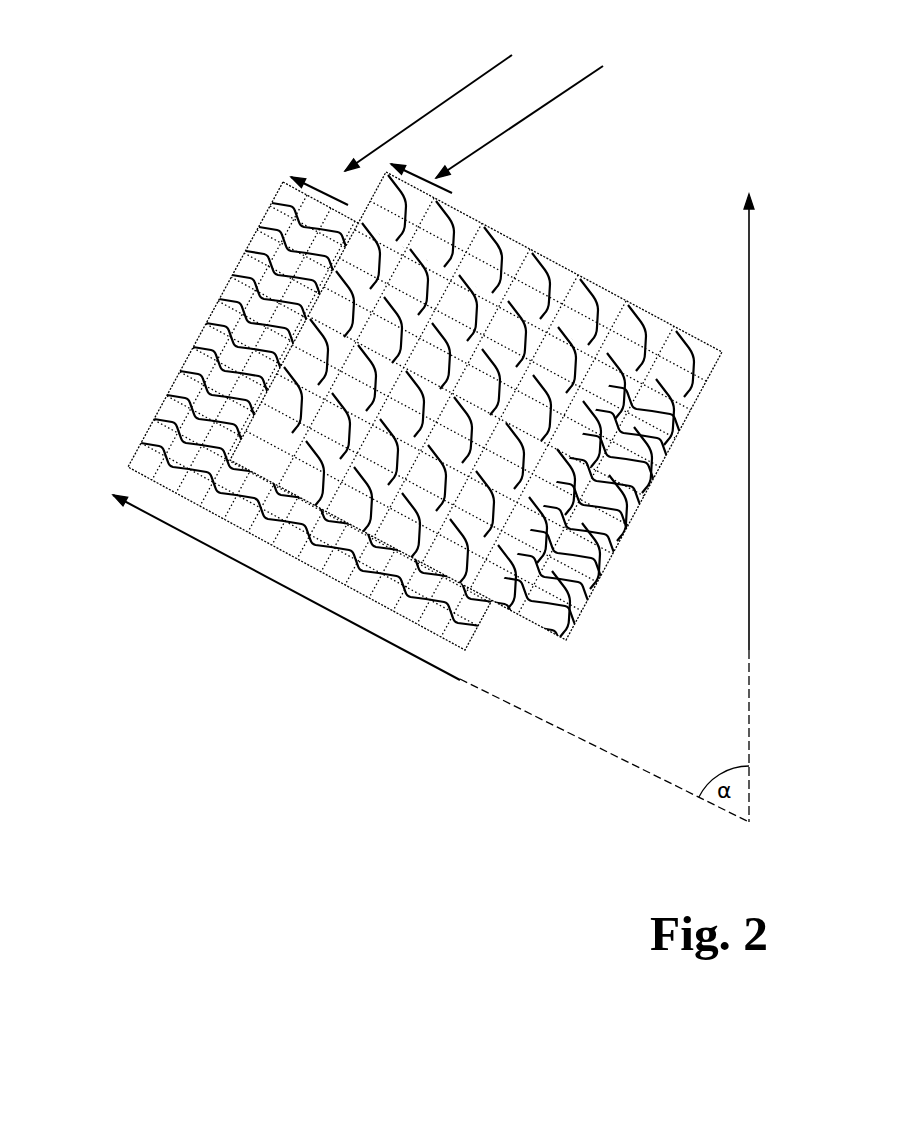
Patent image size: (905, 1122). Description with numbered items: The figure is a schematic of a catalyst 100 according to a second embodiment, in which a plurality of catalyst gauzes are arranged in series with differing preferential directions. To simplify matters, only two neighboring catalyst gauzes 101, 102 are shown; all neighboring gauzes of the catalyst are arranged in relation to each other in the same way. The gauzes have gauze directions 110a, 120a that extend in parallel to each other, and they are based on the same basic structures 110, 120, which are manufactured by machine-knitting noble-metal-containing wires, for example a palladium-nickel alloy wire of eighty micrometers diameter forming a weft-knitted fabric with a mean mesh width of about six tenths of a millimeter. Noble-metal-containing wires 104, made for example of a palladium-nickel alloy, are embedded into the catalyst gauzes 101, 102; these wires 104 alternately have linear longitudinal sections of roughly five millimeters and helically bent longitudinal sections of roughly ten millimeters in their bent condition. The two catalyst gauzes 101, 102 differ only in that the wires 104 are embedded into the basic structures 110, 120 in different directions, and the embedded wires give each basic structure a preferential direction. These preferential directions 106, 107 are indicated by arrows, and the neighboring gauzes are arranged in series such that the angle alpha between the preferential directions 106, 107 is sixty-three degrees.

The catalyst 100 is at (683, 112).
The catalyst gauze 101 is at (454, 101).
The catalyst gauze 102 is at (545, 107).
The noble-metal-containing wires 104 is at (240, 309).
The preferential direction 106 is at (357, 625).
The preferential direction 107 is at (754, 612).
The basic structure 110 is at (144, 444).
The gauze direction 110a is at (318, 190).
The basic structure 120 is at (590, 606).
The gauze direction 120a is at (437, 187).